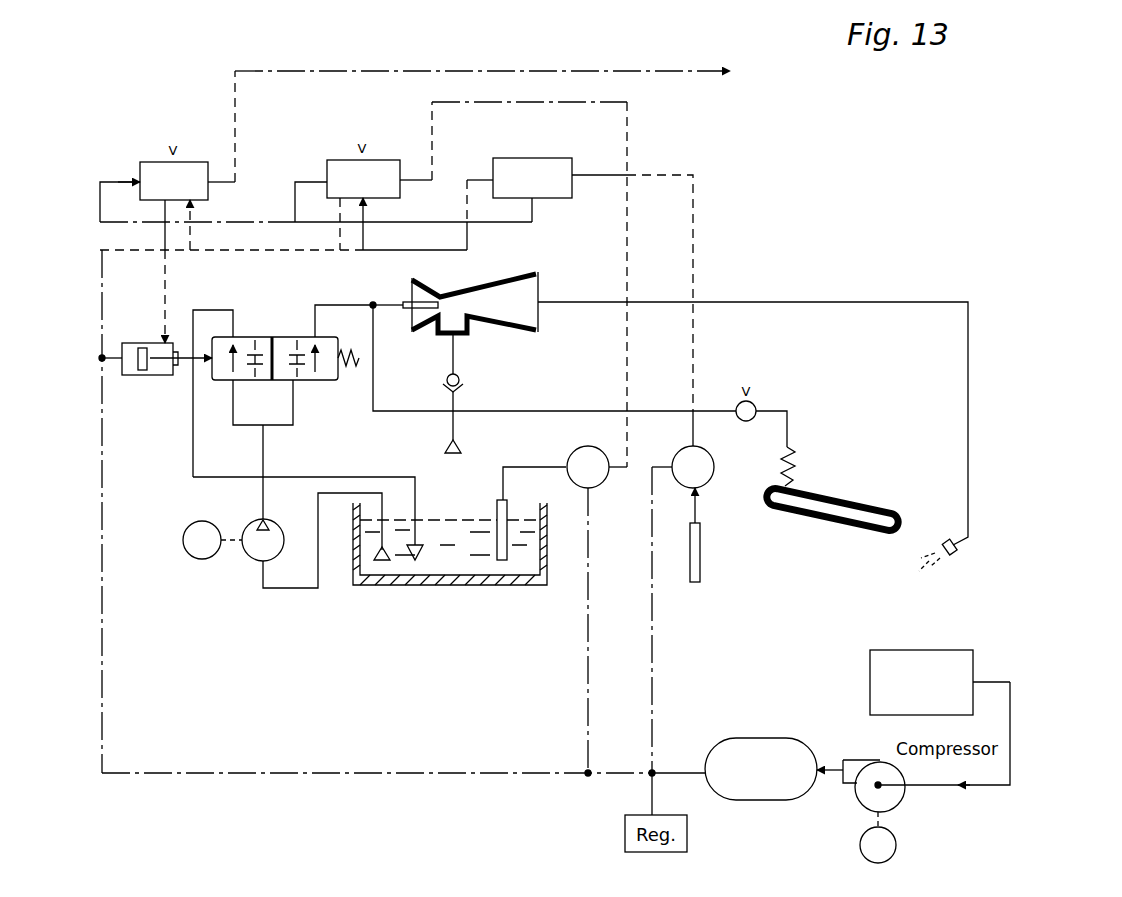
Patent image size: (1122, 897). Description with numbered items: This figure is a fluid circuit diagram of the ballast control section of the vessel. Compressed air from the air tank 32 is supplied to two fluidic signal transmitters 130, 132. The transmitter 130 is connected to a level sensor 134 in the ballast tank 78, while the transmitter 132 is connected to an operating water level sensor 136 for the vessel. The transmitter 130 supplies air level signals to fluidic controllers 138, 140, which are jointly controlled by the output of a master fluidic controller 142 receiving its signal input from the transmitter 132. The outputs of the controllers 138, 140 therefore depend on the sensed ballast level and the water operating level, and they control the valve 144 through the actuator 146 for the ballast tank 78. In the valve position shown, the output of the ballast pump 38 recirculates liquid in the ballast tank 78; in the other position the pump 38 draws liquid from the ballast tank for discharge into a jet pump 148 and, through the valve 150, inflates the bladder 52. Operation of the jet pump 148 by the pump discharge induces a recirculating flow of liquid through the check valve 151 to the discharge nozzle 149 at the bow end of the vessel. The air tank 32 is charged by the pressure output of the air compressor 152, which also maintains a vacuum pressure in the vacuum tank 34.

The air tank 32 is at (772, 738).
The vacuum tank 34 is at (870, 666).
The ballast pump 38 is at (252, 554).
The bladder 52 is at (836, 492).
The ballast tank 78 is at (372, 586).
The signal transmitter 130 is at (572, 453).
The signal transmitter 132 is at (712, 480).
The level sensor 134 is at (508, 549).
The operating water level sensor 136 is at (702, 566).
The fluidic controller 138 is at (155, 163).
The fluidic controller 140 is at (342, 161).
The master fluidic controller 142 is at (527, 158).
The control valve 144 is at (277, 330).
The actuator 146 is at (160, 378).
The jet pump 148 is at (520, 273).
The discharge nozzle 149 is at (953, 555).
The valve 150 is at (754, 404).
The check valve 151 is at (462, 379).
The air compressor 152 is at (894, 794).